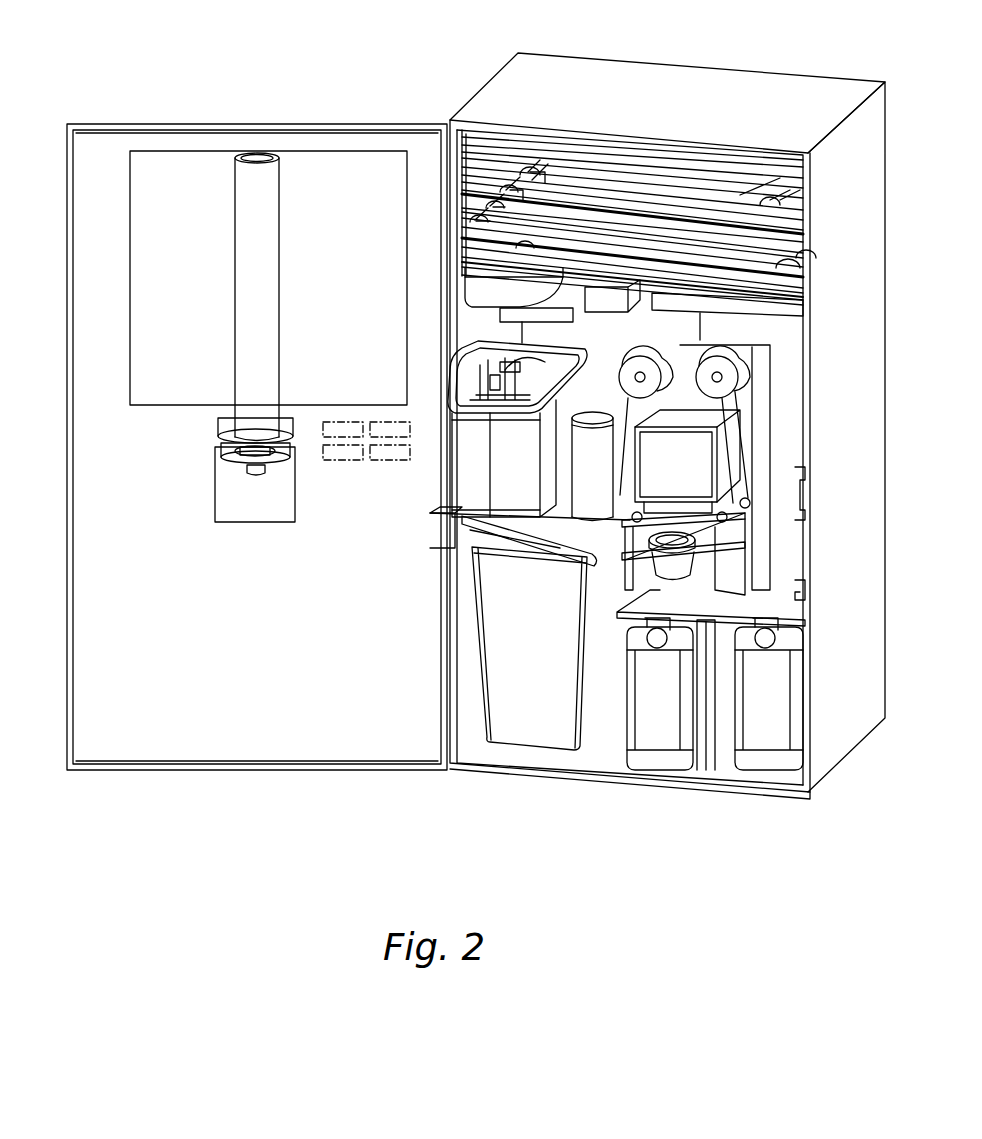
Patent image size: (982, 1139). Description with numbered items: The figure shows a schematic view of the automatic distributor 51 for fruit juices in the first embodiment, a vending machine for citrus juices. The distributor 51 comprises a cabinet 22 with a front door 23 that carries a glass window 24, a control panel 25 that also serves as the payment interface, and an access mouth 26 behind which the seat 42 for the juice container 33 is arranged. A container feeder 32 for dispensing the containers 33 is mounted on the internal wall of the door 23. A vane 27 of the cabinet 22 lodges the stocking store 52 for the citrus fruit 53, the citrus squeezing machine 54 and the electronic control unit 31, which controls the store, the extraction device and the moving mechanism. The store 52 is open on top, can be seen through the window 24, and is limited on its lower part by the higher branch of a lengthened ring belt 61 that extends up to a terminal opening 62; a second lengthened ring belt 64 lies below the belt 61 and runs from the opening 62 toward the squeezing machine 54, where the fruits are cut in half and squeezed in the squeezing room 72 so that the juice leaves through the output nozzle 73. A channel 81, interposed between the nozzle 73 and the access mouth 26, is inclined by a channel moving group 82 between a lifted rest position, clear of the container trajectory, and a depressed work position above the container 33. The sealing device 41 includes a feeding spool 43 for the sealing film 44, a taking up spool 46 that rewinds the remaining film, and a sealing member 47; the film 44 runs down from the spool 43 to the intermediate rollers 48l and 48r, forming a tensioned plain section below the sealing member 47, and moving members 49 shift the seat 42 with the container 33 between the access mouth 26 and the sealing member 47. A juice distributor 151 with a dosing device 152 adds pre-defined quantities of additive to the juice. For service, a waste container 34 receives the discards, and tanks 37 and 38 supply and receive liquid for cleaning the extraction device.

The automatic distributor 51 is at (412, 80).
The cabinet 22 is at (640, 75).
The front door 23 is at (148, 124).
The glass window 24 is at (130, 262).
The control panel 25 is at (343, 478).
The access mouth 26 is at (232, 512).
The vane 27 is at (458, 612).
The electronic control unit 31 is at (802, 310).
The container feeder 32 is at (297, 346).
The juice container 33 is at (249, 470).
The waste container 34 is at (490, 716).
The tank 37 is at (780, 700).
The tank 38 is at (646, 738).
The sealing device 41 is at (780, 345).
The seat 42 is at (668, 570).
The feeding spool 43 is at (746, 371).
The sealing film 44 is at (744, 430).
The taking up spool 46 is at (655, 357).
The sealing member 47 is at (680, 528).
The intermediate roller 48l is at (628, 520).
The intermediate roller 48r is at (738, 540).
The moving members 49 is at (688, 570).
The stocking store 52 is at (430, 176).
The citrus fruit 53 is at (525, 168).
The citrus squeezing machine 54 is at (468, 352).
The lengthened ring belt 61 is at (657, 190).
The terminal opening 62 is at (800, 200).
The second lengthened ring belt 64 is at (466, 250).
The squeezing room 72 is at (458, 468).
The output nozzle 73 is at (484, 512).
The channel 81 is at (512, 545).
The channel moving group 82 is at (432, 540).
The juice distributor 151 is at (605, 410).
The dosing device 152 is at (630, 490).